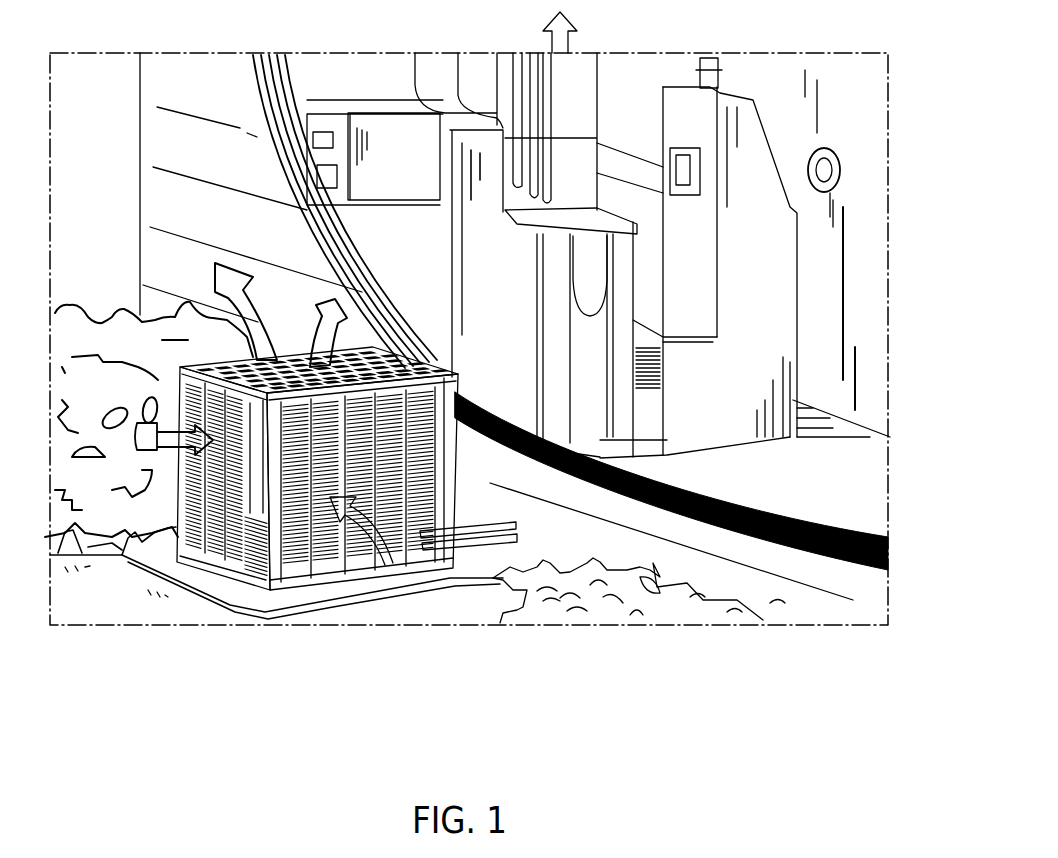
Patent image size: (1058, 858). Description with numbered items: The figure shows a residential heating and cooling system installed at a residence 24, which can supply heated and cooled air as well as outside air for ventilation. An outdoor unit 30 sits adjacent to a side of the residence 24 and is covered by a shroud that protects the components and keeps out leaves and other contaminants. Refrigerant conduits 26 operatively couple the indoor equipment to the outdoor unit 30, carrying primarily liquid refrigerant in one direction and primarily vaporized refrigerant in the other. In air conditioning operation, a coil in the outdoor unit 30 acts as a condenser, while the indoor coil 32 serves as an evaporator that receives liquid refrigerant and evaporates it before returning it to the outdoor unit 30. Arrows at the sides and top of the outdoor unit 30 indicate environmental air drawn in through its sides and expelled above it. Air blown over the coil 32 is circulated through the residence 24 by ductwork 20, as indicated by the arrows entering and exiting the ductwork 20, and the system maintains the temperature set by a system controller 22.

The ductwork 20 is at (773, 307).
The system controller 22 is at (840, 160).
The residence 24 is at (207, 78).
The refrigerant conduits 26 is at (500, 535).
The outdoor unit 30 is at (225, 582).
The coil 32 is at (573, 162).